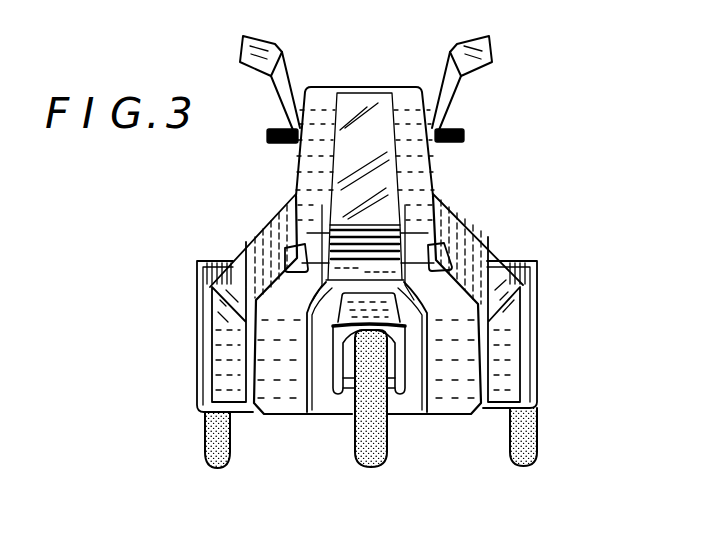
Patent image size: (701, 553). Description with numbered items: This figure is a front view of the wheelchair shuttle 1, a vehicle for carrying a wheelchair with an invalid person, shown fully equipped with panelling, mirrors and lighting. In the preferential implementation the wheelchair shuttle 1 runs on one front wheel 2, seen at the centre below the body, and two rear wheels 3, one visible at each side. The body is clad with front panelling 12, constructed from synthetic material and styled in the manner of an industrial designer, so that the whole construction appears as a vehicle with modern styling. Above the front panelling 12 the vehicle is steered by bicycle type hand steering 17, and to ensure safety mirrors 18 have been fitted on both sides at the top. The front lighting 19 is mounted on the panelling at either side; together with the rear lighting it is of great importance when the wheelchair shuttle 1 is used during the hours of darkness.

The wheelchair shuttle 1 is at (262, 188).
The front wheel 2 is at (389, 449).
The rear wheels 3 is at (205, 448).
The front panelling 12 is at (438, 170).
The bicycle type hand steering 17 is at (466, 136).
The mirrors 18 is at (239, 52).
The front lighting 19 is at (286, 252).